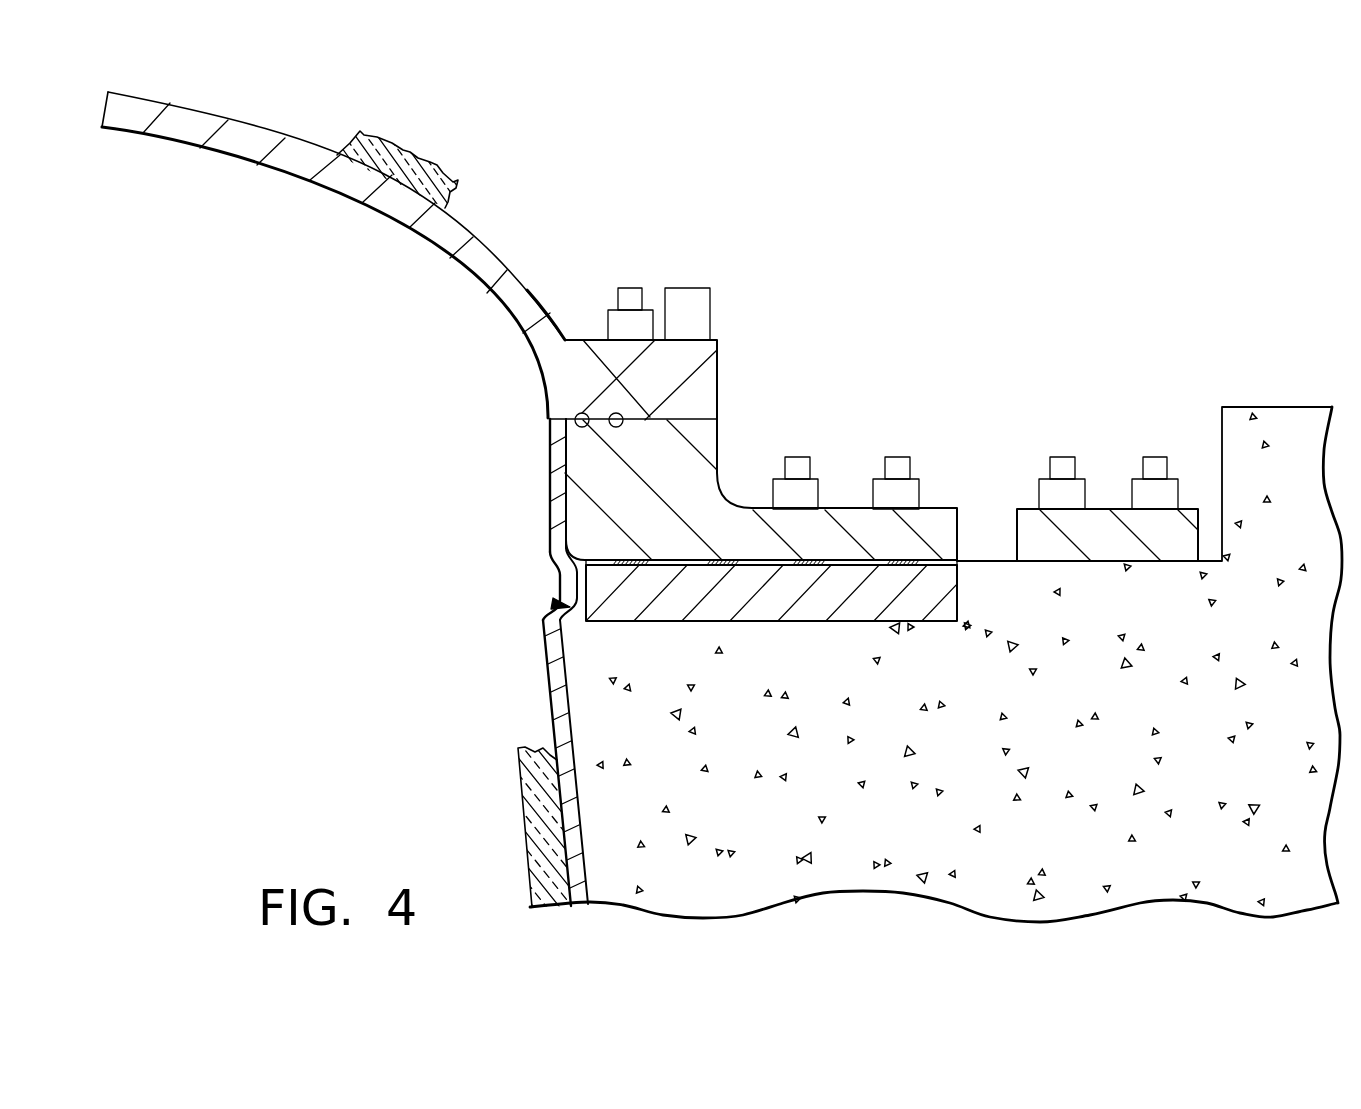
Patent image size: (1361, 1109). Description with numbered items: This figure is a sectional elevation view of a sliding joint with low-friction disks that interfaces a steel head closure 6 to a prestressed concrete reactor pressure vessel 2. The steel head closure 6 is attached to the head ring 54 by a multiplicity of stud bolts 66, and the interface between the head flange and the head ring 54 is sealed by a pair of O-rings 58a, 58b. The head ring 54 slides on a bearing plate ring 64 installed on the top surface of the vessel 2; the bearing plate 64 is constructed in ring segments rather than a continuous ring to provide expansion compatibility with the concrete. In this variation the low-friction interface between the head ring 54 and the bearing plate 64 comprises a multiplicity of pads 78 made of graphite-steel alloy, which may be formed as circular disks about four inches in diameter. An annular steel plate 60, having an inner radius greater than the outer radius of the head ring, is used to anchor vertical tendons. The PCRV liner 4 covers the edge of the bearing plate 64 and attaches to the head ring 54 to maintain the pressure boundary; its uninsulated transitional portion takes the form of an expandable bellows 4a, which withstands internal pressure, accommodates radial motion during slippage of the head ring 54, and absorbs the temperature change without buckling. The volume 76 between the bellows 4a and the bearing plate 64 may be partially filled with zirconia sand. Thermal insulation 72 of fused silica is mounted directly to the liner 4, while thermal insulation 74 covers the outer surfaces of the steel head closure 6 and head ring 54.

The prestressed concrete reactor pressure vessel 2 is at (1290, 422).
The PCRV liner 4 is at (525, 662).
The expandable bellows 4a is at (560, 573).
The steel head closure 6 is at (488, 260).
The head ring 54 is at (710, 433).
The O-ring 58a is at (575, 414).
The O-ring 58b is at (612, 412).
The annular steel plate 60 is at (1105, 508).
The bearing plate ring 64 is at (852, 580).
The stud bolts 66 is at (692, 318).
The thermal insulation 72 is at (520, 807).
The thermal insulation 74 is at (430, 162).
The volume 76 is at (555, 598).
The pads 78 is at (718, 560).